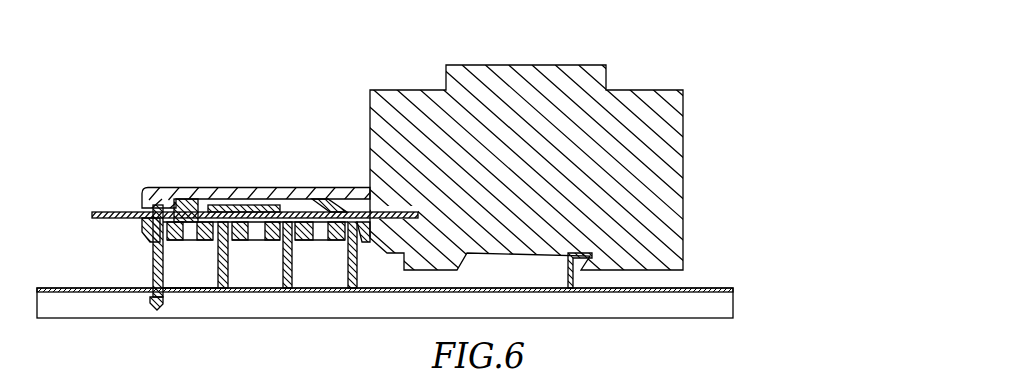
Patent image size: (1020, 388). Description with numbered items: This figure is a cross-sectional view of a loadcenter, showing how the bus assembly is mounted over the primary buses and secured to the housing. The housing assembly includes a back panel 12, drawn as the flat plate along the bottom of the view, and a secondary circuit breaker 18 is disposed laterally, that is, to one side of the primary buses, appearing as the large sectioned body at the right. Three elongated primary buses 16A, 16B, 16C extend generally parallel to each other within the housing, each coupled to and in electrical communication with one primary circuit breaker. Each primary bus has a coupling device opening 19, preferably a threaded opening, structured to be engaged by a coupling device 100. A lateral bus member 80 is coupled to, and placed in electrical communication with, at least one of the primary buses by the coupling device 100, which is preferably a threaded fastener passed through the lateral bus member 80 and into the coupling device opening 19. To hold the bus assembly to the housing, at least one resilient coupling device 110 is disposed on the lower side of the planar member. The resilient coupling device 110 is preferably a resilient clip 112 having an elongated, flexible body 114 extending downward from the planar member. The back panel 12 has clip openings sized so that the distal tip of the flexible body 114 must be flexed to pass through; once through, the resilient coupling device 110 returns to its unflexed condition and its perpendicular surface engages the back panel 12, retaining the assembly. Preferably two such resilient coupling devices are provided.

The back panel 12 is at (733, 299).
The secondary circuit breaker 18 is at (645, 95).
The coupling device 100 is at (183, 200).
The lateral bus member 80 is at (108, 212).
The flexible body 114 is at (158, 278).
The resilient clip 112 is at (157, 312).
The resilient coupling device 110 is at (172, 292).
The primary bus 16A is at (208, 243).
The coupling device opening 19 is at (262, 243).
The primary bus 16B is at (270, 243).
The primary bus 16C is at (342, 243).